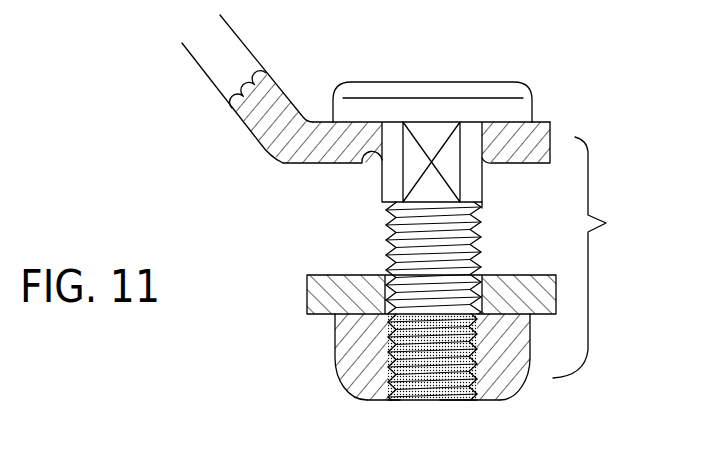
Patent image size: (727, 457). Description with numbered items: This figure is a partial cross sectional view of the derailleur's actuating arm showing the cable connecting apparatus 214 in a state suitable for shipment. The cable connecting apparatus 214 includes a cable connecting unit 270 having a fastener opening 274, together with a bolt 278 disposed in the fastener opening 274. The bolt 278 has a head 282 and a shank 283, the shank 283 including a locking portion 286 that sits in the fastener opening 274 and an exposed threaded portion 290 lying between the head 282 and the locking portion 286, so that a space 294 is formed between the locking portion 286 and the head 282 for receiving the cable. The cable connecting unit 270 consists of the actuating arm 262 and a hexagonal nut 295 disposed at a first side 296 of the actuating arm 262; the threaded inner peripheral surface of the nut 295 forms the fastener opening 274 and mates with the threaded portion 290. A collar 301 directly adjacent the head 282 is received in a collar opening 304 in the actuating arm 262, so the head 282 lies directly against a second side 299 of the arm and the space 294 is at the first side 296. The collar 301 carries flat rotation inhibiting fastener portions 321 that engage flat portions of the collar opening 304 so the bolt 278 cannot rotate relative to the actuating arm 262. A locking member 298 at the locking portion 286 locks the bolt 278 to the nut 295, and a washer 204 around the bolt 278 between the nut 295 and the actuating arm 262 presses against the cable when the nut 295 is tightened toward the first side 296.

The washer 204 is at (307, 280).
The cable connecting apparatus 214 is at (448, 238).
The actuating arm 262 is at (202, 53).
The cable connecting unit 270 is at (602, 257).
The fastener opening 274 is at (375, 360).
The bolt 278 is at (323, 88).
The head 282 is at (437, 82).
The shank 283 is at (462, 416).
The locking portion 286 is at (482, 340).
The threaded portion 290 is at (392, 232).
The space 294 is at (507, 226).
The nut 295 is at (337, 322).
The first side 296 is at (302, 164).
The locking member 298 is at (392, 402).
The second side 299 is at (317, 121).
The collar 301 is at (382, 178).
The collar opening 304 is at (485, 152).
The flat rotation inhibiting fastener portion 321 is at (440, 135).